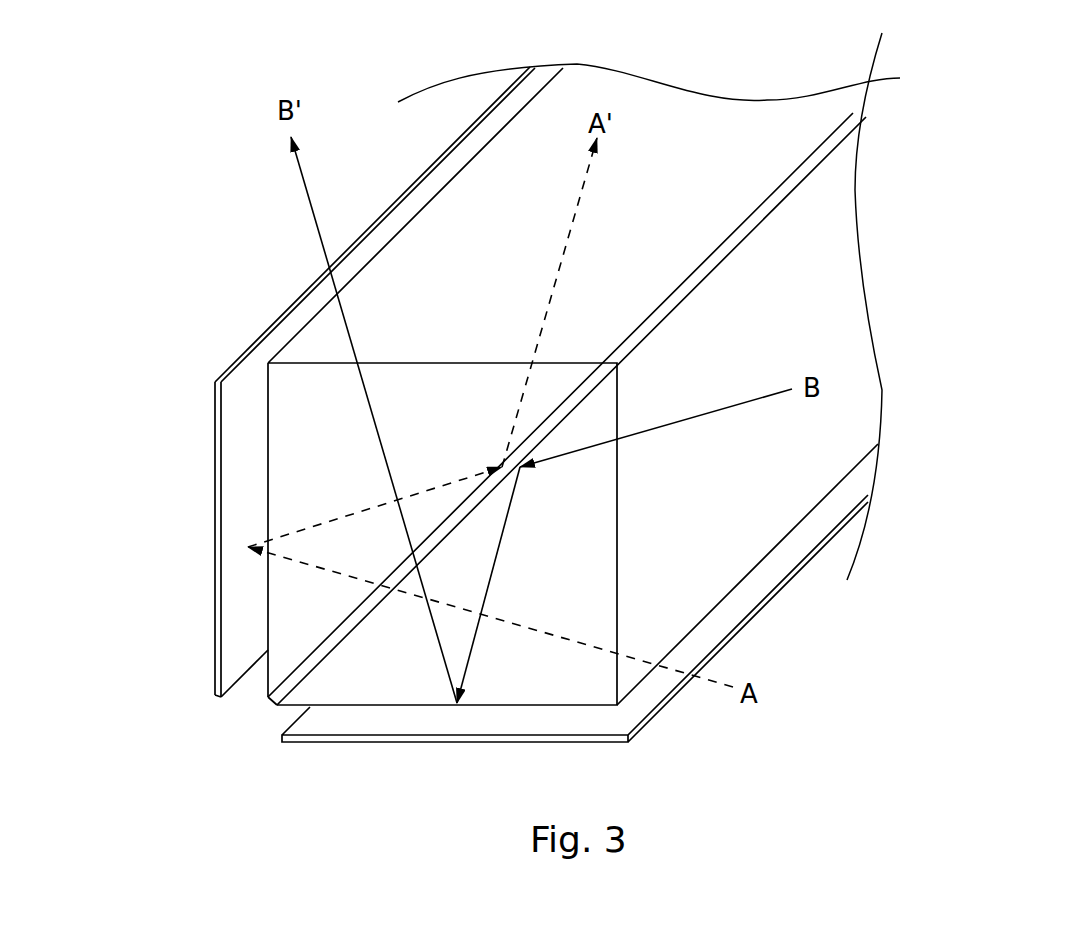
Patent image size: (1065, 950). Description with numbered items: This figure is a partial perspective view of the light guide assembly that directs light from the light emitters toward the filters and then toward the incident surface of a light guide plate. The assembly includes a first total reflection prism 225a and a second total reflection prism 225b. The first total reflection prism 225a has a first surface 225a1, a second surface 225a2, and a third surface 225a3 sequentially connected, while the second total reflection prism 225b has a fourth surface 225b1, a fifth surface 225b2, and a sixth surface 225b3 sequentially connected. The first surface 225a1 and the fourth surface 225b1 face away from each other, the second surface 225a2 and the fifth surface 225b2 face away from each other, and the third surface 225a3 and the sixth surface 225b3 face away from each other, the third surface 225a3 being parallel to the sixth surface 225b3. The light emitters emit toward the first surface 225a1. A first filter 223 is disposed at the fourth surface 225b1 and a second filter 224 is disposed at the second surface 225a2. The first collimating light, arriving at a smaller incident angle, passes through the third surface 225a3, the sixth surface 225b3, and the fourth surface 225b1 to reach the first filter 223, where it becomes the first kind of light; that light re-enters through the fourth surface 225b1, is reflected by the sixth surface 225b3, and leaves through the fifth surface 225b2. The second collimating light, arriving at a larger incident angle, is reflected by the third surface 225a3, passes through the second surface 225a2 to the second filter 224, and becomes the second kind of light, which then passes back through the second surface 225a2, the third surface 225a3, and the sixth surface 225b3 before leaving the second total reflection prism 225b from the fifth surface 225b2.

The first filter 223 is at (213, 542).
The second filter 224 is at (420, 747).
The first total reflection prism 225a is at (860, 308).
The first surface 225a1 is at (828, 237).
The second surface 225a2 is at (567, 708).
The third surface 225a3 is at (304, 678).
The second total reflection prism 225b is at (687, 128).
The fourth surface 225b1 is at (267, 417).
The fifth surface 225b2 is at (482, 185).
The sixth surface 225b3 is at (307, 656).